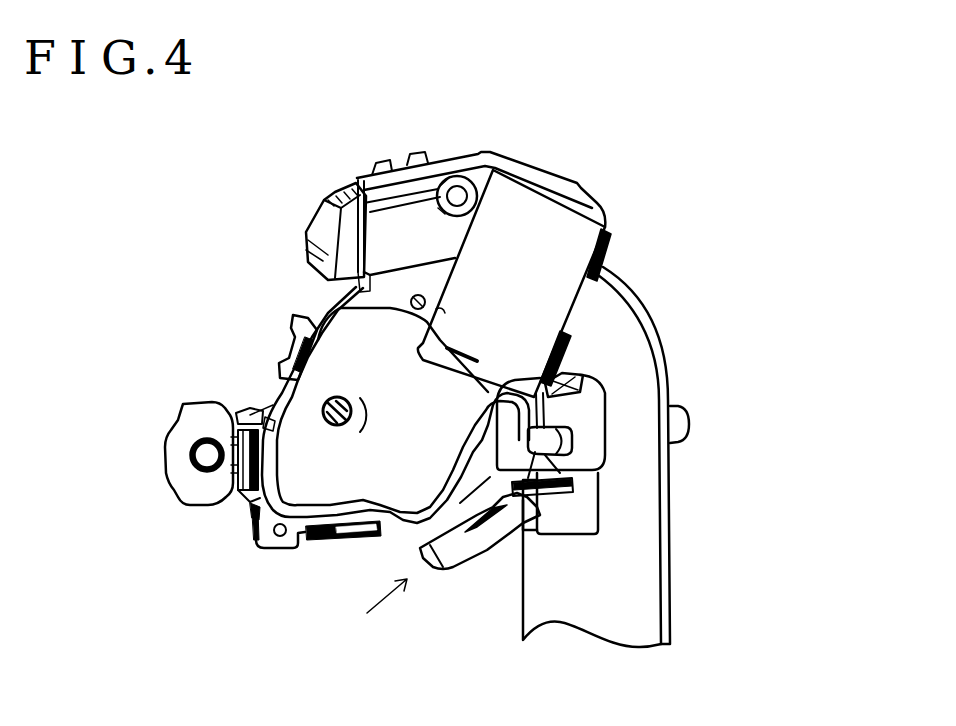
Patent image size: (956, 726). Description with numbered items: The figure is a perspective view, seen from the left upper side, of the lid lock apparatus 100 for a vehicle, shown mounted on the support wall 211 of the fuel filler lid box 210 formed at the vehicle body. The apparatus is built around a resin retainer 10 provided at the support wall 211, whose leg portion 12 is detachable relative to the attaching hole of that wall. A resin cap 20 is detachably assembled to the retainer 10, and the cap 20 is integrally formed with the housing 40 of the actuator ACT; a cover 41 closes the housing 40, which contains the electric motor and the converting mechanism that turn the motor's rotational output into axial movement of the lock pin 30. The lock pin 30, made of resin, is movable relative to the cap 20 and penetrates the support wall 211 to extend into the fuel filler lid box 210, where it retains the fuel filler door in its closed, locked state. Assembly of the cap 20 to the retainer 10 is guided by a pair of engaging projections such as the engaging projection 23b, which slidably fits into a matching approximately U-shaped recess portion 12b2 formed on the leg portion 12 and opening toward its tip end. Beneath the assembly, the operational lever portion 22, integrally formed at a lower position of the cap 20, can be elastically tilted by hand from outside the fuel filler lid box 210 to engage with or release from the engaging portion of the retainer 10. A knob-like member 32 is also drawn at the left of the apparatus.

The actuator ACT is at (546, 153).
The cover 41 is at (595, 221).
The retainer 10 is at (610, 367).
The lid lock apparatus 100 is at (297, 318).
The knob / lock operating member 32 is at (166, 452).
The housing 40 is at (306, 534).
The operational lever portion 22 is at (450, 568).
The leg portion 12 is at (603, 455).
The recess portion 12b2 is at (562, 440).
The cap 20 is at (574, 373).
The engaging projection 23b is at (532, 439).
The lock pin 30 is at (695, 406).
The fuel filler lid box 210 is at (598, 637).
The support wall 211 is at (661, 557).